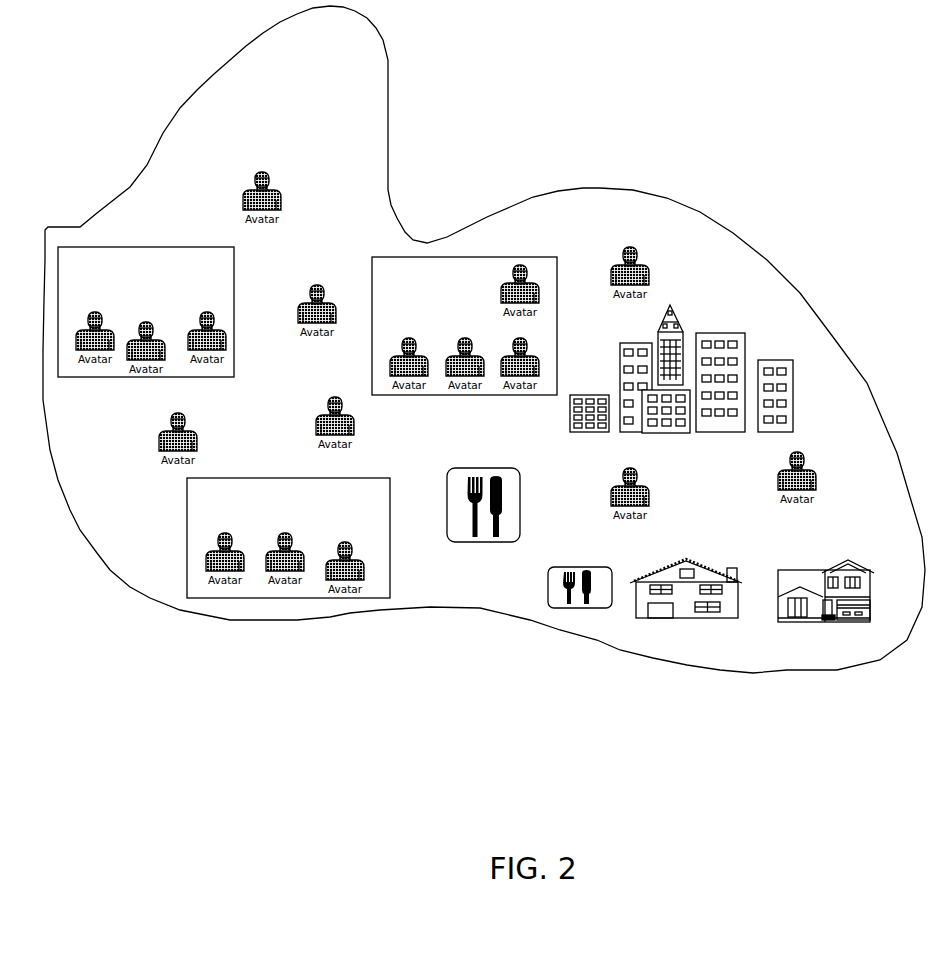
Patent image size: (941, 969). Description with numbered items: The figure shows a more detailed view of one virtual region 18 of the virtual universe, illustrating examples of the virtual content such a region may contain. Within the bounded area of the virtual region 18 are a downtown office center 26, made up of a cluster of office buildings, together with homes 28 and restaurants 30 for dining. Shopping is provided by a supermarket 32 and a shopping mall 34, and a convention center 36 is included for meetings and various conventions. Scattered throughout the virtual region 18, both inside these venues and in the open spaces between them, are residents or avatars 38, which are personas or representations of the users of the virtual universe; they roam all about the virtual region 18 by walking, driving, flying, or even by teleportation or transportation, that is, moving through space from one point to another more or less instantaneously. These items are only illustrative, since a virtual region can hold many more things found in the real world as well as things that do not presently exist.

The virtual region 18 is at (388, 62).
The downtown office center 26 is at (742, 325).
The homes 28 is at (697, 618).
The restaurants 30 is at (520, 510).
The supermarket 32 is at (147, 247).
The shopping mall 34 is at (187, 537).
The convention center 36 is at (458, 396).
The avatars 38 is at (280, 188).